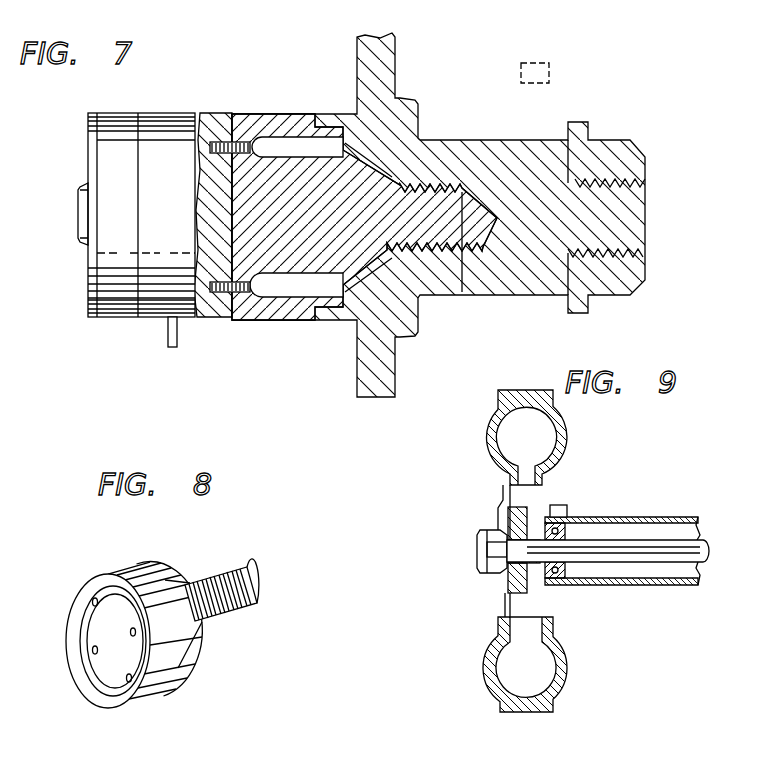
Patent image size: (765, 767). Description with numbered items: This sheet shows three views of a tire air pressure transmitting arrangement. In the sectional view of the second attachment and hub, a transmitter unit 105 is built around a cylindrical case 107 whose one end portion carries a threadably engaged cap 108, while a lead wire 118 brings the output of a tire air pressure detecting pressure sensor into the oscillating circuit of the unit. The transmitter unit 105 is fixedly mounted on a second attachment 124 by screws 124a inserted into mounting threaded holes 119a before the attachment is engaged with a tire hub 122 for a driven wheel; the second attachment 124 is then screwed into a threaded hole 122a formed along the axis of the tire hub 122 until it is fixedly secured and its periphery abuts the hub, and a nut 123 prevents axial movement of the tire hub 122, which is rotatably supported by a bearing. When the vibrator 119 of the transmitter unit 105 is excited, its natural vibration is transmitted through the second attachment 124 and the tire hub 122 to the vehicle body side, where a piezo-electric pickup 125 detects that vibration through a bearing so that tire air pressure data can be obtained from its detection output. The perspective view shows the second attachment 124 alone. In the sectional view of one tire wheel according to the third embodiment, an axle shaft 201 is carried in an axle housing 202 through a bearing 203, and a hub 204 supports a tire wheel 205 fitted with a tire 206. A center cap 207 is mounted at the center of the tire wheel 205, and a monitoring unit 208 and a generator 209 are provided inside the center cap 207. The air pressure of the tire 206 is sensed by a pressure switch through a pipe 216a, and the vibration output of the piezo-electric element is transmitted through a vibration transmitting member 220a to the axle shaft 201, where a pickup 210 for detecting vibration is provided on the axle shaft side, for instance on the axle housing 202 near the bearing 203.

In FIG. 7, the transmitter unit 105 is at (152, 112).
In FIG. 7, the cylindrical case 107 is at (153, 320).
In FIG. 7, the cap 108 is at (109, 319).
In FIG. 7, the lead wire 118 is at (180, 348).
In FIG. 7, the vibrator 119 is at (208, 113).
In FIG. 7, the mounting threaded holes 119a is at (243, 300).
In FIG. 7, the tire hub 122 is at (357, 47).
In FIG. 7, the threaded hole 122a is at (462, 293).
In FIG. 7, the nut 123 is at (600, 140).
In FIG. 7, the second attachment 124 is at (278, 113).
In FIG. 8, the second attachment 124 is at (115, 567).
In FIG. 7, the screws 124a is at (263, 285).
In FIG. 7, the piezo-electric pickup 125 is at (550, 66).
In FIG. 9, the axle shaft 201 is at (637, 565).
In FIG. 9, the axle housing 202 is at (683, 586).
In FIG. 9, the bearing 203 is at (565, 570).
In FIG. 9, the hub 204 is at (528, 590).
In FIG. 9, the tire wheel 205 is at (506, 618).
In FIG. 9, the tire 206 is at (487, 430).
In FIG. 9, the center cap 207 is at (505, 537).
In FIG. 9, the monitoring unit 208 is at (497, 566).
In FIG. 9, the generator 209 is at (477, 564).
In FIG. 9, the pickup 210 is at (560, 505).
In FIG. 9, the pipe 216a is at (500, 497).
In FIG. 9, the vibration transmitting member 220a is at (508, 592).